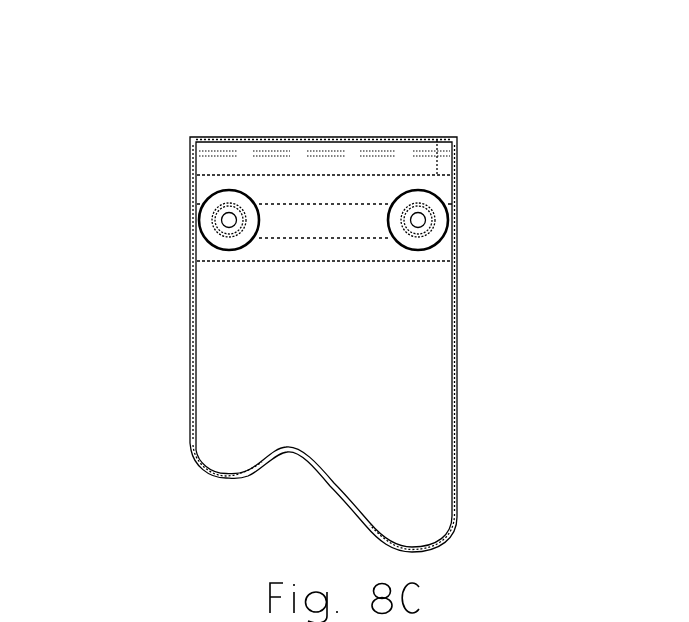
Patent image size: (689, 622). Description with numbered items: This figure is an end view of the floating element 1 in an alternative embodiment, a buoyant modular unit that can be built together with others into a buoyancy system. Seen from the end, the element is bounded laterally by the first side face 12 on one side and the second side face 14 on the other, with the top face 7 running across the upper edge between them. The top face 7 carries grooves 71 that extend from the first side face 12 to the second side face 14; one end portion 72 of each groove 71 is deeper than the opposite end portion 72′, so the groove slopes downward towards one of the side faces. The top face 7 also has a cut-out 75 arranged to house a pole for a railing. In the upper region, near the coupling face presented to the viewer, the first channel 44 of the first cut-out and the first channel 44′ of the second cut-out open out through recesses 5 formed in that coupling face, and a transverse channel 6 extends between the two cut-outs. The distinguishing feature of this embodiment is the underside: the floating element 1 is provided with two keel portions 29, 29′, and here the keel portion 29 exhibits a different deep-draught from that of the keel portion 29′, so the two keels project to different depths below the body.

The floating element 1 is at (163, 92).
The recesses 5 is at (191, 210).
The transverse channel 6 is at (322, 203).
The top face 7 is at (362, 138).
The first side face 12 is at (457, 297).
The second side face 14 is at (191, 282).
The keel portion 29 is at (453, 524).
The keel portion 29′ is at (197, 458).
The first channel 44 is at (433, 215).
The first channel 44′ is at (218, 208).
The grooves 71 is at (310, 148).
The end portion 72 is at (203, 155).
The end portion 72′ is at (428, 138).
The cut-out 75 is at (443, 138).